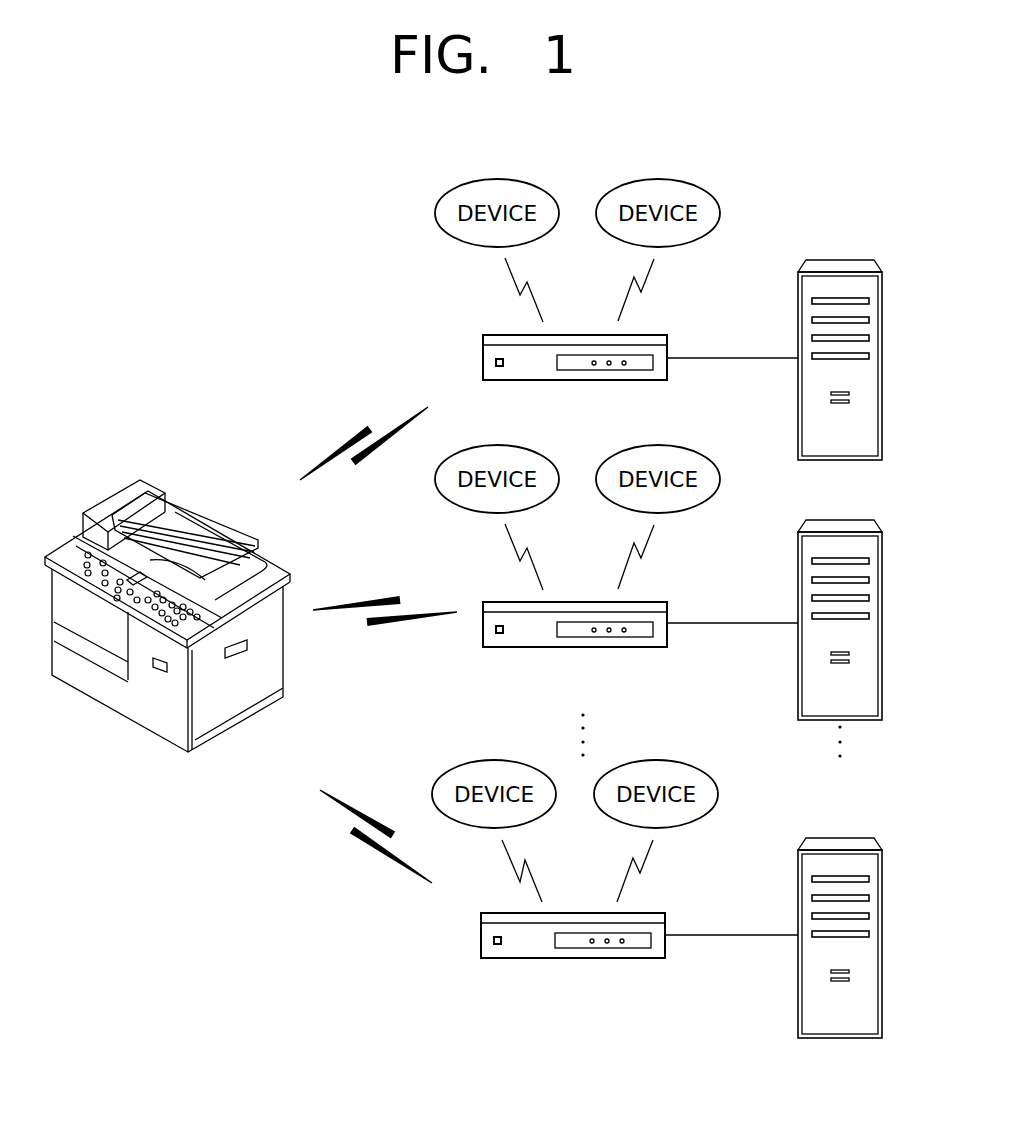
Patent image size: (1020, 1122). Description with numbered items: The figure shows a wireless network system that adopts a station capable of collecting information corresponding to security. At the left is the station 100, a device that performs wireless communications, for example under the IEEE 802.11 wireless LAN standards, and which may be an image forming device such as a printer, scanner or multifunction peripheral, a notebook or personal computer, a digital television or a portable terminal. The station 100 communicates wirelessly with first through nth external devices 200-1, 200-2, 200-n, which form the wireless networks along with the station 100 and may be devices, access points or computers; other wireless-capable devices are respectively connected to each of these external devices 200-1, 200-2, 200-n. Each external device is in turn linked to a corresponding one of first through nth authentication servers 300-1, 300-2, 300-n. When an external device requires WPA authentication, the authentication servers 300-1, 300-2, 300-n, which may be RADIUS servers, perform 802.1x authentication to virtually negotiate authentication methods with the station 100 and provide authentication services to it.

The station 100 is at (140, 478).
The first external device 200-1 is at (583, 380).
The second external device 200-2 is at (583, 647).
The nth external device 200-n is at (578, 960).
The first authentication server 300-1 is at (840, 257).
The second authentication server 300-2 is at (840, 519).
The nth authentication server 300-n is at (840, 836).